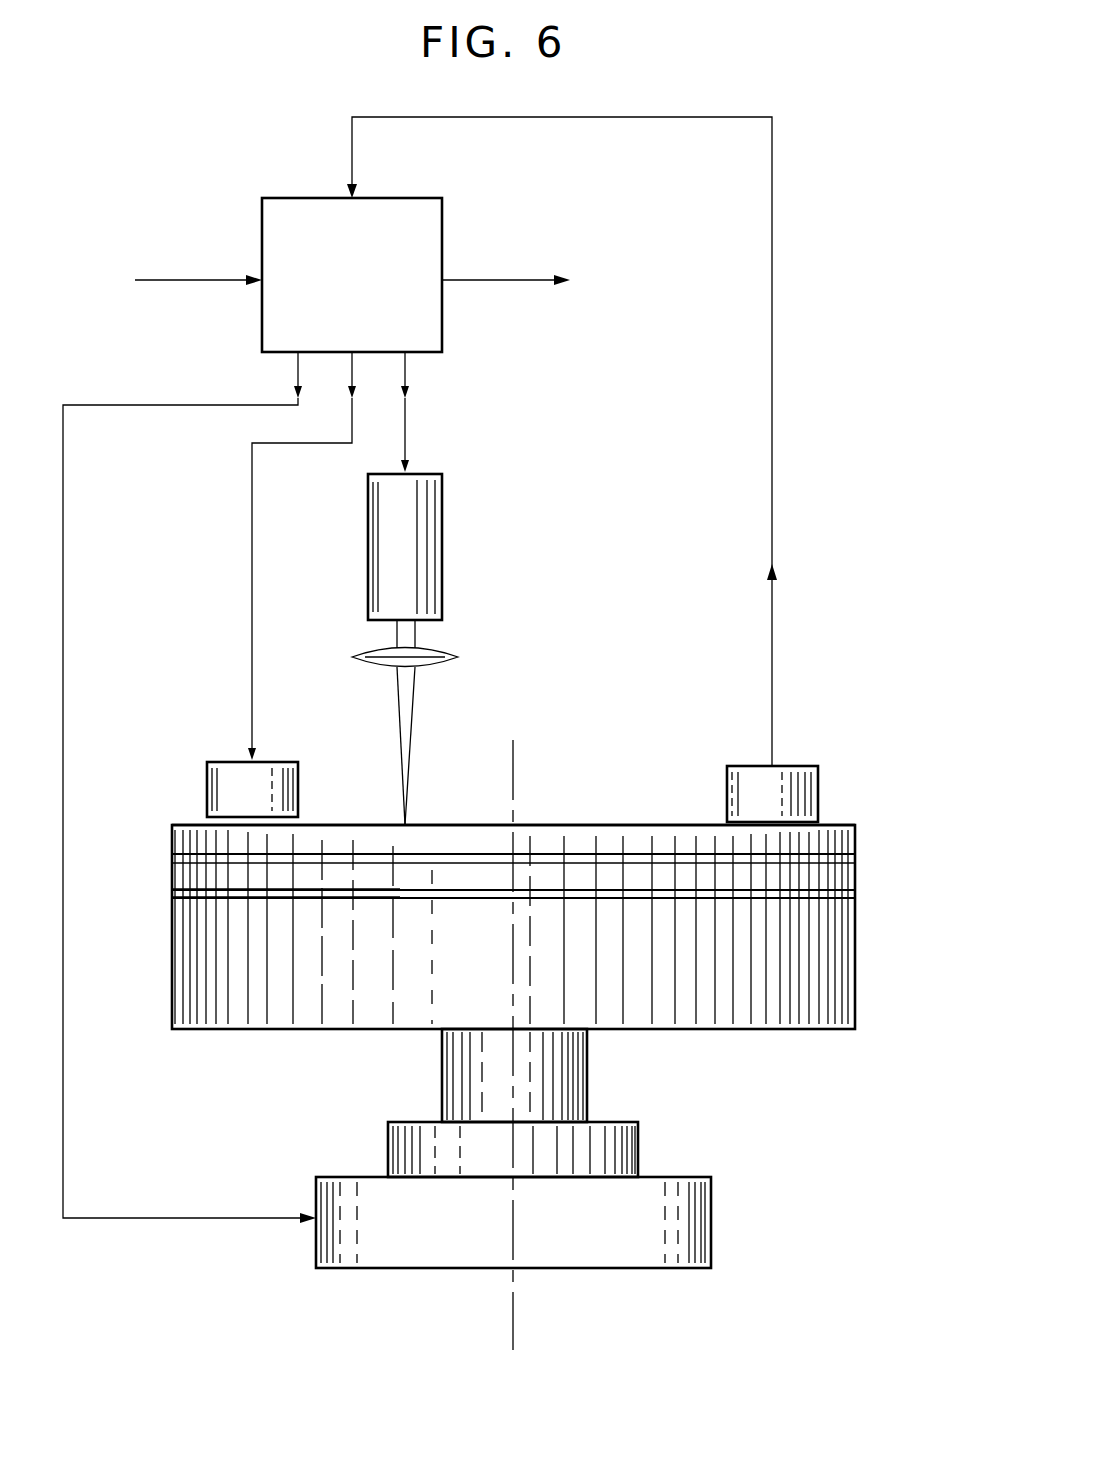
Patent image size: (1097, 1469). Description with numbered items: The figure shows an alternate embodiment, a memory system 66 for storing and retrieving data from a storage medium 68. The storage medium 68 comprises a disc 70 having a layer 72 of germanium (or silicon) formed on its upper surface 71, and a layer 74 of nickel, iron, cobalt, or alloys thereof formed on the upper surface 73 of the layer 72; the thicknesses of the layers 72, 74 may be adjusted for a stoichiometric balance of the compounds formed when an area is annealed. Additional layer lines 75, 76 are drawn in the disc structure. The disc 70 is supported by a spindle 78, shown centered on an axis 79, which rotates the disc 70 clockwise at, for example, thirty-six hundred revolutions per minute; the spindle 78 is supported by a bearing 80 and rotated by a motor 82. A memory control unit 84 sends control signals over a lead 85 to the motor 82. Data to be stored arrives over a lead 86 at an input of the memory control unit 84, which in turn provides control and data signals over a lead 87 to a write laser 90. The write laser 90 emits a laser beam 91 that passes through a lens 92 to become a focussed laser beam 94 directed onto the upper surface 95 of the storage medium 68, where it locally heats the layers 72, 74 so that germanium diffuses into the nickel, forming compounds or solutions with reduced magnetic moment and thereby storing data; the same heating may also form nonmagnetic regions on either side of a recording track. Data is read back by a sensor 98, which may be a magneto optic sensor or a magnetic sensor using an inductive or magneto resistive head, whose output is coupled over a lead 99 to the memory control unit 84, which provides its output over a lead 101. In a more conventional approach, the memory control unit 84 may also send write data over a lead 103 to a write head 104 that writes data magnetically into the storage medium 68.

The memory system 66 is at (826, 72).
The storage medium 68 is at (640, 800).
The disc 70 is at (856, 969).
The upper surface 71 is at (195, 897).
The layer 72 is at (856, 900).
The upper surface 73 is at (205, 889).
The layer 74 is at (856, 884).
The dielectric layer 75 is at (856, 864).
The protective layer 76 is at (856, 846).
The spindle 78 is at (588, 1083).
The axis of rotation 79 is at (515, 1312).
The bearing 80 is at (639, 1145).
The motor 82 is at (712, 1230).
The memory control unit 84 is at (308, 198).
The lead 85 is at (222, 1218).
The lead 86 is at (205, 280).
The lead 87 is at (410, 428).
The write laser 90 is at (443, 547).
The laser beam 91 is at (396, 635).
The lens 92 is at (438, 650).
The focussed laser beam 94 is at (410, 723).
The upper surface 95 is at (578, 830).
The sensor 98 is at (800, 765).
The lead 99 is at (776, 505).
The lead 101 is at (515, 280).
The lead 103 is at (250, 586).
The write head 104 is at (228, 762).